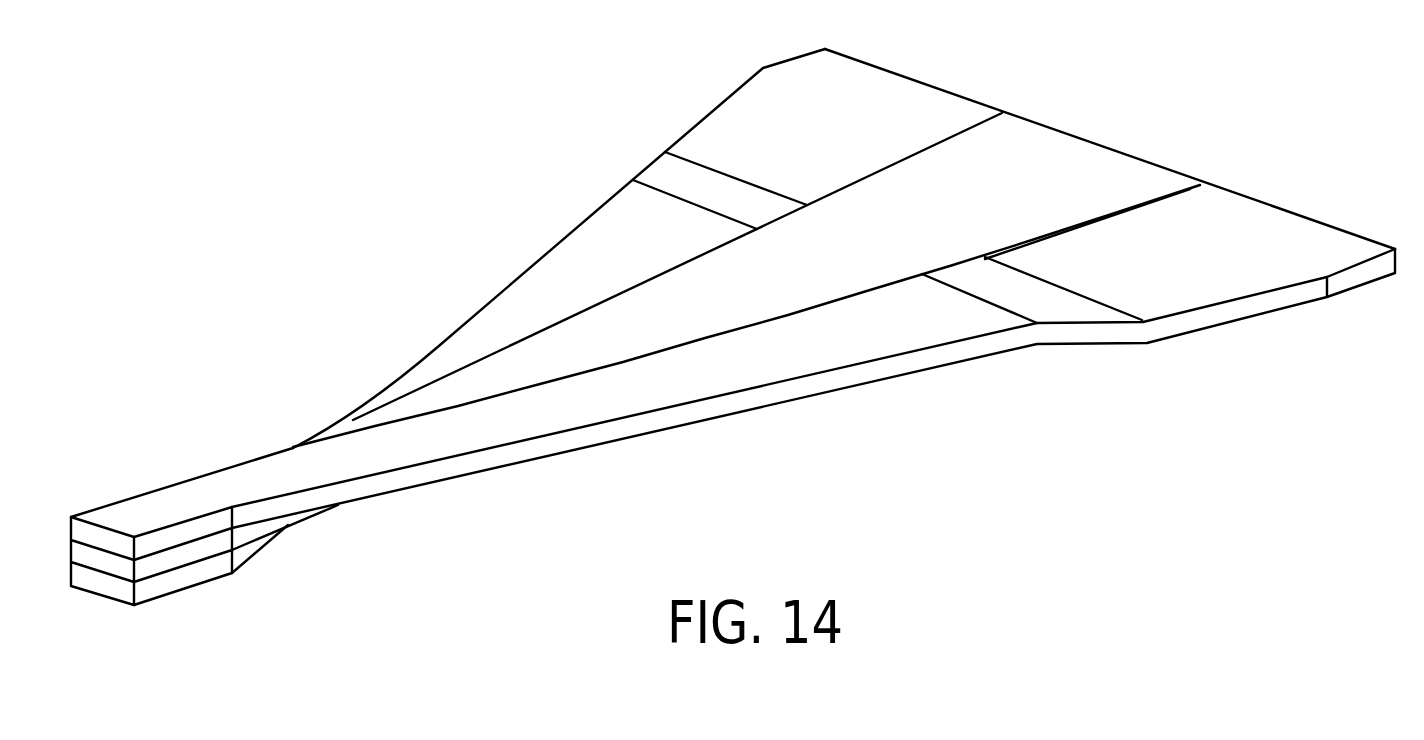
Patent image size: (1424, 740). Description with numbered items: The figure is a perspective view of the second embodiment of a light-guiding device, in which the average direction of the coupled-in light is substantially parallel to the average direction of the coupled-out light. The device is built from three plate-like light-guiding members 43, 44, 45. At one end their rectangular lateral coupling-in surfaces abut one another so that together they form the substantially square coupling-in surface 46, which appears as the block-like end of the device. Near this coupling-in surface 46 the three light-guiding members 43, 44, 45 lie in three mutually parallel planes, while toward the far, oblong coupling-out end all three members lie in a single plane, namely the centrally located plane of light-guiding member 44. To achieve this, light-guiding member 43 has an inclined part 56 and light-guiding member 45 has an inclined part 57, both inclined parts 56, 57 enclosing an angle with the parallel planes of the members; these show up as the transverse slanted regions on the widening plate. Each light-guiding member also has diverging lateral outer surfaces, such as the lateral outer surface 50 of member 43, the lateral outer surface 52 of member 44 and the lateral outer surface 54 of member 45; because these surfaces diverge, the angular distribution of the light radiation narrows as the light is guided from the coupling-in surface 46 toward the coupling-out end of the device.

The plate-like light-guiding member 43 is at (510, 427).
The plate-like light-guiding member 44 is at (542, 352).
The plate-like light-guiding member 45 is at (600, 272).
The coupling-in surface 46 is at (102, 558).
The lateral outer surface 50 is at (915, 362).
The lateral outer surface 52 is at (283, 522).
The lateral outer surface 54 is at (247, 552).
The inclined part 56 is at (1058, 308).
The inclined part 57 is at (670, 185).